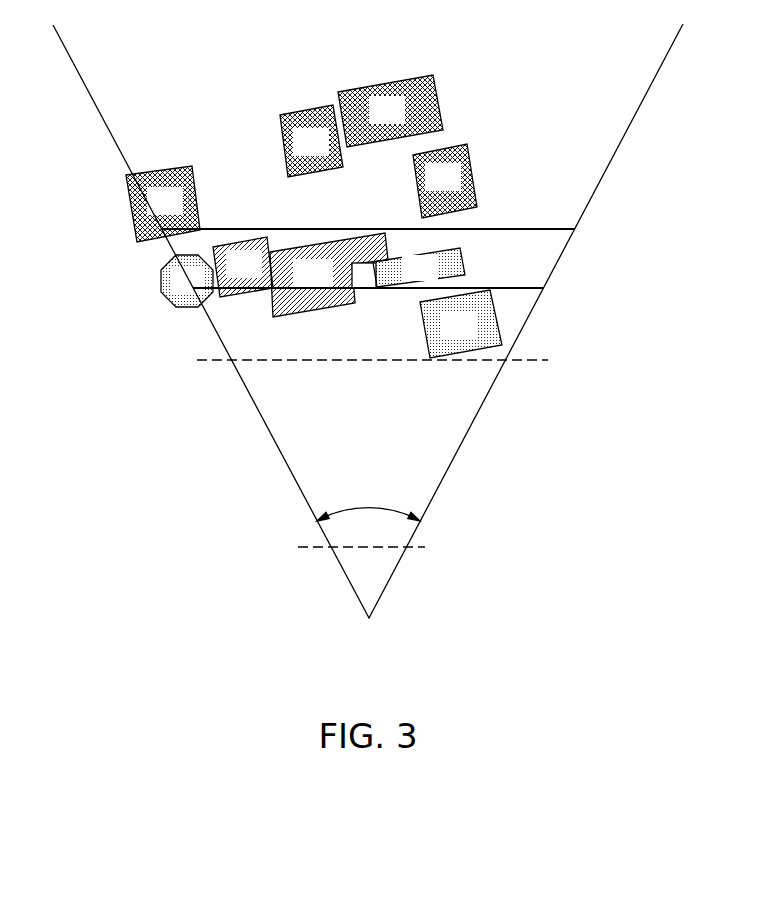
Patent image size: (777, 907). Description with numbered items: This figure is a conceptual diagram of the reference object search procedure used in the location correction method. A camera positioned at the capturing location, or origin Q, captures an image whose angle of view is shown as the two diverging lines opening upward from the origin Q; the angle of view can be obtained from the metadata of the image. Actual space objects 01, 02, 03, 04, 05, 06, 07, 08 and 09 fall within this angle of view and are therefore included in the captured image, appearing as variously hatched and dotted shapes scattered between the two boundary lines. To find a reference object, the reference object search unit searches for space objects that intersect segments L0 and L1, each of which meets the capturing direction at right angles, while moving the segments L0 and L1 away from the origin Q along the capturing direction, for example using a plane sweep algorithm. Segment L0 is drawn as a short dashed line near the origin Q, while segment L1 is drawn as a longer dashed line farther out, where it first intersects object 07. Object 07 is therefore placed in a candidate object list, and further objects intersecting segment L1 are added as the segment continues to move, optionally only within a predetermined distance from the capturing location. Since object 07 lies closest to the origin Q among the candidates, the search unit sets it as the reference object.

The actual space object 01 is at (163, 204).
The actual space object 02 is at (187, 281).
The actual space object 03 is at (243, 267).
The actual space object 04 is at (329, 275).
The actual space object 05 is at (311, 141).
The actual space object 06 is at (390, 111).
The actual space object 07 is at (461, 324).
The actual space object 08 is at (445, 181).
The actual space object 09 is at (419, 267).
The segment L0 is at (378, 547).
The segment L1 is at (390, 360).
The origin Q is at (370, 634).